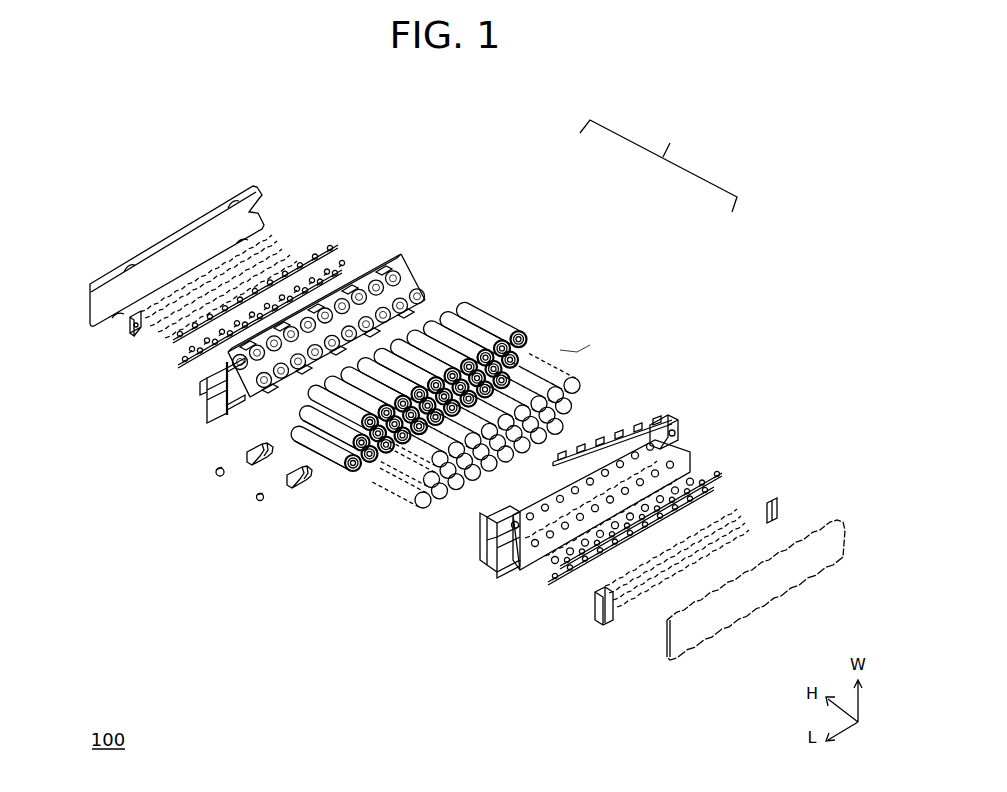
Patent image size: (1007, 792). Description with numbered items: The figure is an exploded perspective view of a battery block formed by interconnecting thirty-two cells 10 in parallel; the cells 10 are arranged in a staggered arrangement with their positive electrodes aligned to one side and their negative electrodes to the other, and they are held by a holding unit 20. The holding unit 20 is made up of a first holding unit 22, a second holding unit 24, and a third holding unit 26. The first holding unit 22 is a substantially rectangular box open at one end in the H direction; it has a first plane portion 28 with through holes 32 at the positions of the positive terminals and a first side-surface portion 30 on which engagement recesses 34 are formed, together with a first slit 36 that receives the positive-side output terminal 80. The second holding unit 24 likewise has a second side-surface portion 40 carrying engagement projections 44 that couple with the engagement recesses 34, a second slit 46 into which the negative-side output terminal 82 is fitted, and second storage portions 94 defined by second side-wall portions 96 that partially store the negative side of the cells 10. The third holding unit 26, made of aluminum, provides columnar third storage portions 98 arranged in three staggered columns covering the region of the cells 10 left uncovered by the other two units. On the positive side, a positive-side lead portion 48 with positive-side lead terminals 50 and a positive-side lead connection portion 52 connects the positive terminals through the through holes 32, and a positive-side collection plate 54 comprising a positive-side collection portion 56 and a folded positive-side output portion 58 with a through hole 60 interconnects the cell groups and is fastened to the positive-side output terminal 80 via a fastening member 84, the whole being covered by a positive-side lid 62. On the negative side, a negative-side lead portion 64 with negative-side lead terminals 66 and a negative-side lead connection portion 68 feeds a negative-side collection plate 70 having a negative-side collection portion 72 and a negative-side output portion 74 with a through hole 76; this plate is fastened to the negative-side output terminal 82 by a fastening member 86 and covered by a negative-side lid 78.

The cells 10 is at (435, 397).
The holding unit 20 is at (658, 164).
The first holding unit 22 is at (675, 420).
The second holding unit 24 is at (390, 262).
The third holding unit 26 is at (577, 352).
The first plane portion 28 is at (540, 548).
The first side-surface portion 30 is at (497, 576).
The through holes 32 is at (505, 566).
The engagement recesses 34 is at (647, 400).
The first slit 36 is at (488, 542).
The second side-surface portion 40 is at (210, 412).
The engagement projections 44 is at (395, 268).
The second slit 46 is at (205, 395).
The positive-side lead portion 48 is at (655, 545).
The positive-side lead terminals 50 is at (655, 500).
The positive-side lead connection portion 52 is at (734, 470).
The positive-side collection plate 54 is at (775, 480).
The positive-side collection portion 56 is at (778, 512).
The positive-side output portion 58 is at (592, 604).
The through hole 60 is at (601, 622).
The positive-side lid 62 is at (668, 652).
The negative-side lead portion 64 is at (195, 375).
The negative-side lead terminals 66 is at (328, 258).
The negative-side lead connection portion 68 is at (350, 265).
The negative-side collection plate 70 is at (300, 240).
The negative-side collection portion 72 is at (263, 240).
The negative-side output portion 74 is at (132, 335).
The through hole 76 is at (132, 338).
The negative-side lid 78 is at (90, 300).
The positive-side output terminal 80 is at (288, 482).
The negative-side output terminal 82 is at (245, 460).
The fastening member 84 is at (256, 498).
The fastening member 86 is at (215, 474).
The second storage portions 94 is at (262, 394).
The second side-wall portions 96 is at (330, 349).
The third storage portions 98 is at (488, 470).